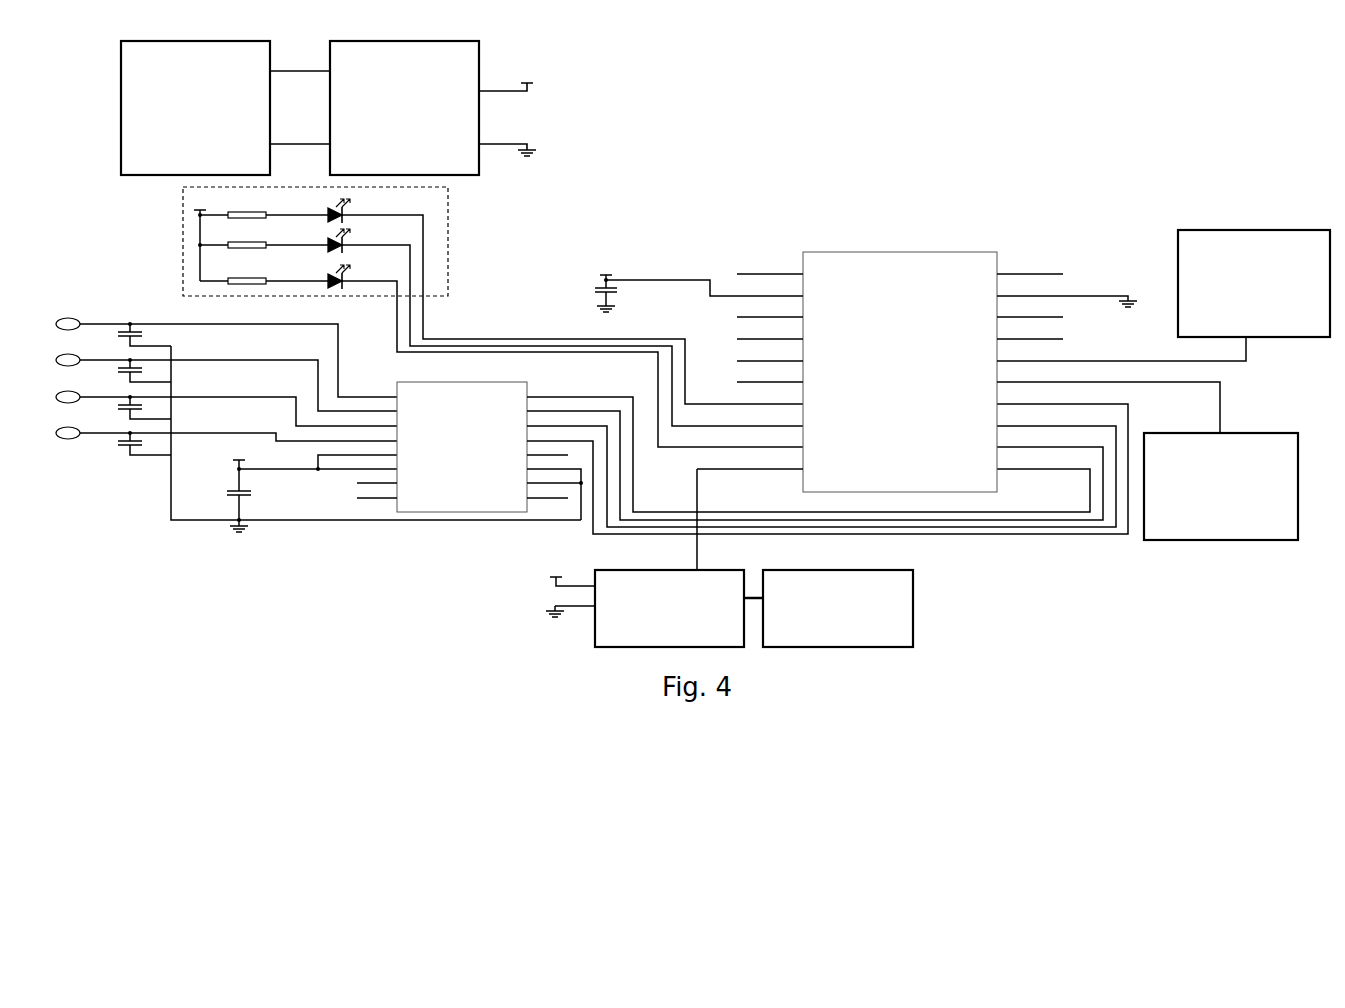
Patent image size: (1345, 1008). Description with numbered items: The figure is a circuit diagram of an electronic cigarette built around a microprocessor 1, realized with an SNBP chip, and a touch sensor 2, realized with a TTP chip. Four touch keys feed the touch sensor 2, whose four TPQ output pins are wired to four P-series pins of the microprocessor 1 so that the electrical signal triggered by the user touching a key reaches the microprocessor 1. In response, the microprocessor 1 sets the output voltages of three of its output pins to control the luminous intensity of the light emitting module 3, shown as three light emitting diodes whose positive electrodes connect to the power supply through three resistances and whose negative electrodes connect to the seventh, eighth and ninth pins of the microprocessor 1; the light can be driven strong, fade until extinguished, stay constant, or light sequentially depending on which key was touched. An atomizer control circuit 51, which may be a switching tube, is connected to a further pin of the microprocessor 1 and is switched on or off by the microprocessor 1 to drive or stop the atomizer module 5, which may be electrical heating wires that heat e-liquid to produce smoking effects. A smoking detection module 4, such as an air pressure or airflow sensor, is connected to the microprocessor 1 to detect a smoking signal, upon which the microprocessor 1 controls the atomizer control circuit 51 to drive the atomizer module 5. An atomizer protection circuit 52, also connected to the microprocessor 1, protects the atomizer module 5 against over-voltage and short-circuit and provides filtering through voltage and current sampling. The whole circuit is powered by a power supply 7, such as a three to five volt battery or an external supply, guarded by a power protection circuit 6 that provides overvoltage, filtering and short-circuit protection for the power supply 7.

The microprocessor 1 is at (890, 252).
The touch sensor 2 is at (443, 382).
The light emitting module 3 is at (448, 247).
The smoking detection module 4 is at (1221, 486).
The atomizer module 5 is at (828, 608).
The power protection circuit 6 is at (404, 108).
The power supply 7 is at (195, 108).
The atomizer control circuit 51 is at (644, 606).
The atomizer protection circuit 52 is at (1254, 283).